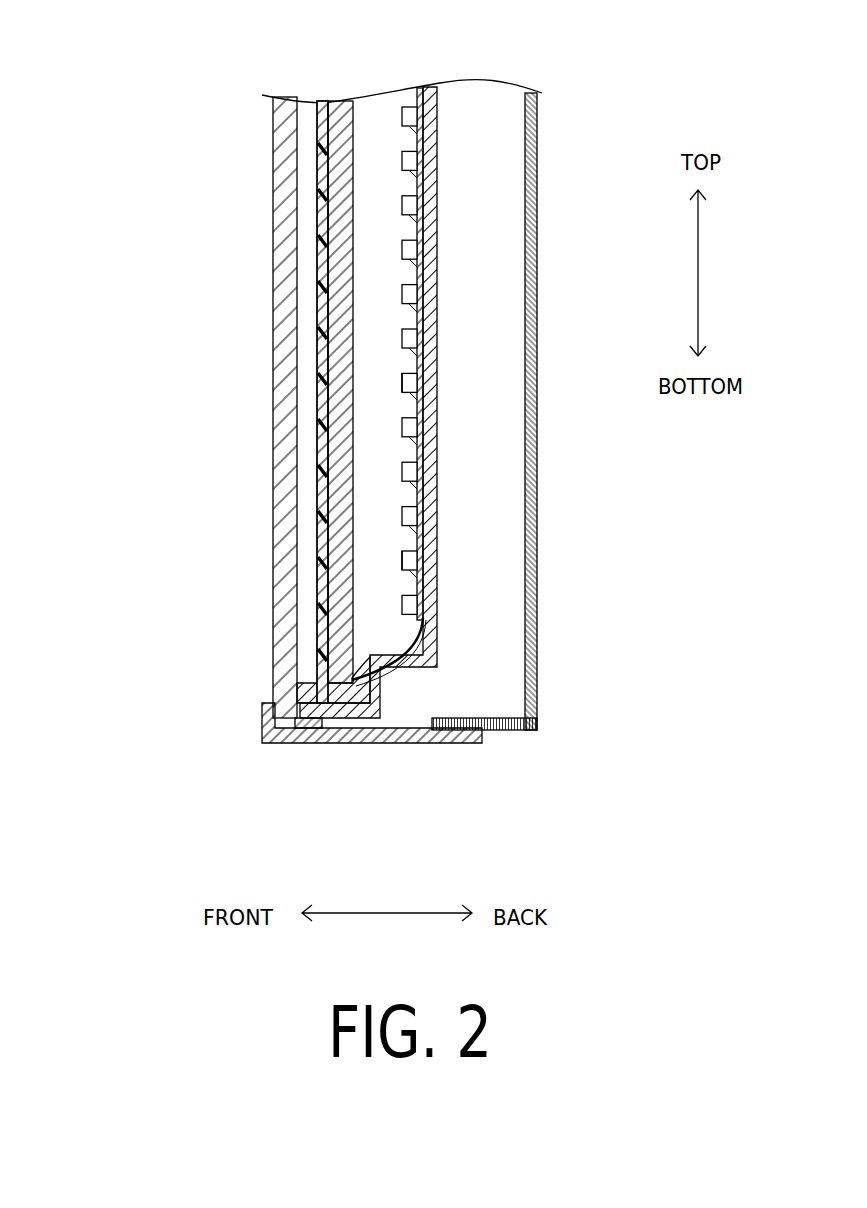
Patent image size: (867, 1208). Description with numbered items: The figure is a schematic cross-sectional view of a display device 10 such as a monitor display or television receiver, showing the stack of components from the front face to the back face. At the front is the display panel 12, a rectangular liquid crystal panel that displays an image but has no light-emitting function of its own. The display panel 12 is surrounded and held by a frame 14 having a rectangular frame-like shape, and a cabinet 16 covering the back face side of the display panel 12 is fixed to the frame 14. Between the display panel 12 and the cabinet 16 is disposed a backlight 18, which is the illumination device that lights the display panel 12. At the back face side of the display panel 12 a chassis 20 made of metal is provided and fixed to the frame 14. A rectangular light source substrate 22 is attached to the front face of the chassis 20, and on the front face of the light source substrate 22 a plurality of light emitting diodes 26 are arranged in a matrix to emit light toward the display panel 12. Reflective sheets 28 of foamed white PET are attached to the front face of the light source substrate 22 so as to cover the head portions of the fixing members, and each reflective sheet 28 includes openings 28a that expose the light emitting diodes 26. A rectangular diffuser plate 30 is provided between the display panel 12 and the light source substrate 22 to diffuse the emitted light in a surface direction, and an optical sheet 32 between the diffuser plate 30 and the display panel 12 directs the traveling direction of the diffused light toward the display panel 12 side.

The display device 10 is at (197, 91).
The display panel 12 is at (274, 222).
The frame 14 is at (287, 743).
The cabinet 16 is at (525, 300).
The backlight 18 is at (450, 277).
The chassis 20 is at (437, 437).
The light source substrate 22 is at (422, 333).
The light emitting diode 26 is at (407, 387).
The reflective sheet 28 is at (402, 272).
The opening 28a is at (403, 382).
The diffuser plate 30 is at (328, 315).
The optical sheet 32 is at (318, 297).